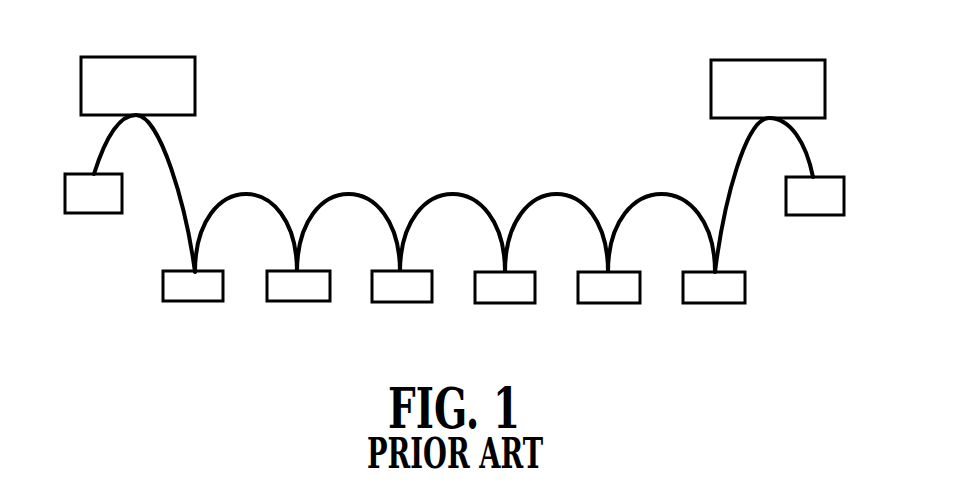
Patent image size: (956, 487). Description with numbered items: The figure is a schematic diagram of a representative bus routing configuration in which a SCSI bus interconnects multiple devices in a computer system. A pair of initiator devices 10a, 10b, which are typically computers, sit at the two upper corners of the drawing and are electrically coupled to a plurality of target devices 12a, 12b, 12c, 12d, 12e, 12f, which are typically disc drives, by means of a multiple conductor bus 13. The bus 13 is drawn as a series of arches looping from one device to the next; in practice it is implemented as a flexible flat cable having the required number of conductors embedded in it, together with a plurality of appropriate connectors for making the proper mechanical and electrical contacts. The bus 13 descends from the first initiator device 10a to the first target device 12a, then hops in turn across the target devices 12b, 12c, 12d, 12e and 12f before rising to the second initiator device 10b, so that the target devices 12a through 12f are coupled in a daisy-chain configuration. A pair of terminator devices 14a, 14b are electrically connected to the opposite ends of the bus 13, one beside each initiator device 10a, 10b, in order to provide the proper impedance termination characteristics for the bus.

The initiator device 10a is at (122, 57).
The initiator device 10b is at (793, 60).
The target device 12a is at (177, 301).
The target device 12b is at (280, 301).
The target device 12c is at (388, 302).
The target device 12d is at (488, 303).
The target device 12e is at (593, 303).
The target device 12f is at (705, 303).
The multiple conductor bus 13 is at (363, 197).
The terminator device 14a is at (108, 213).
The terminator device 14b is at (799, 215).